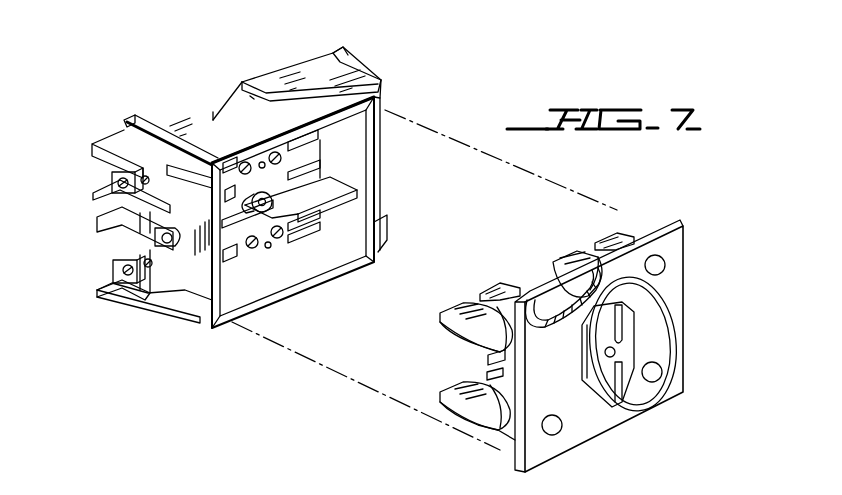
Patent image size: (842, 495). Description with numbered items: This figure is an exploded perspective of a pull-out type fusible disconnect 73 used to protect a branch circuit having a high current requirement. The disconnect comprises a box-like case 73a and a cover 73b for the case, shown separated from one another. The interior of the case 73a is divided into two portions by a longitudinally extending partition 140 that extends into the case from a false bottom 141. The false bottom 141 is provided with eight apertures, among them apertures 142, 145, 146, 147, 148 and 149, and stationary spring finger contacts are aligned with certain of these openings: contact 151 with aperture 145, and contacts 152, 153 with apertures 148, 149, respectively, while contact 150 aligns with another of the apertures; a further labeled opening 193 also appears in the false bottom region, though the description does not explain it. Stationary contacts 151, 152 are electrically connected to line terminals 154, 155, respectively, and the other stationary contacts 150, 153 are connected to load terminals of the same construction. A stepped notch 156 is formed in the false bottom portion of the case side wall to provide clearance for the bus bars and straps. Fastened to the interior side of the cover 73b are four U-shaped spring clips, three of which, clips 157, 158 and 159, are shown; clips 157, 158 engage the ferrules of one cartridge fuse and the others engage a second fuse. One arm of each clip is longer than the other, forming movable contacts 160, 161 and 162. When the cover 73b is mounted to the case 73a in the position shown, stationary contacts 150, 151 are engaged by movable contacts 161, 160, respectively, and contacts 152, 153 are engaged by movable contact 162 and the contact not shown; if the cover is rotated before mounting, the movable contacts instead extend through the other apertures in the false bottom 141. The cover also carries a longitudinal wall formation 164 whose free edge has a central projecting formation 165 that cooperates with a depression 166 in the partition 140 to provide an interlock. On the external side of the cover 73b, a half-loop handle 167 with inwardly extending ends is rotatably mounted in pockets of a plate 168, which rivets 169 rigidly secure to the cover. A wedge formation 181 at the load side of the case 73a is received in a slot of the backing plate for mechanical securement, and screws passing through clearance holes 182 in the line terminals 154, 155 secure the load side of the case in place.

The pull-out type fusible disconnect 73 is at (343, 403).
The case 73a is at (268, 62).
The cover 73b is at (584, 451).
The partition 140 is at (340, 185).
The false bottom 141 is at (325, 157).
The aperture 142 is at (240, 160).
The slot 193 is at (304, 134).
The aperture 145 is at (233, 195).
The aperture 146 is at (322, 213).
The aperture 147 is at (213, 253).
The aperture 148 is at (240, 262).
The aperture 149 is at (318, 167).
The stationary spring finger contact 150 is at (279, 162).
The stationary spring finger contact 151 is at (228, 203).
The stationary spring finger contact 152 is at (225, 267).
The stationary spring finger contact 153 is at (308, 237).
The line terminal 154 is at (108, 182).
The line terminal 155 is at (113, 265).
The stepped notch 156 is at (228, 97).
The U-shaped spring clip 157 is at (525, 265).
The U-shaped spring clip 158 is at (617, 232).
The U-shaped spring clip 159 is at (472, 415).
The movable contact 160 is at (453, 305).
The movable contact 161 is at (568, 248).
The movable contact 162 is at (458, 388).
The longitudinal wall formation 164 is at (488, 360).
The projecting formation 165 is at (540, 315).
The depression 166 is at (277, 215).
The half-loop handle 167 is at (677, 355).
The plate 168 is at (600, 392).
The rivets 169 is at (602, 365).
The wedge formation 181 is at (346, 58).
The clearance hole 182 is at (107, 195).